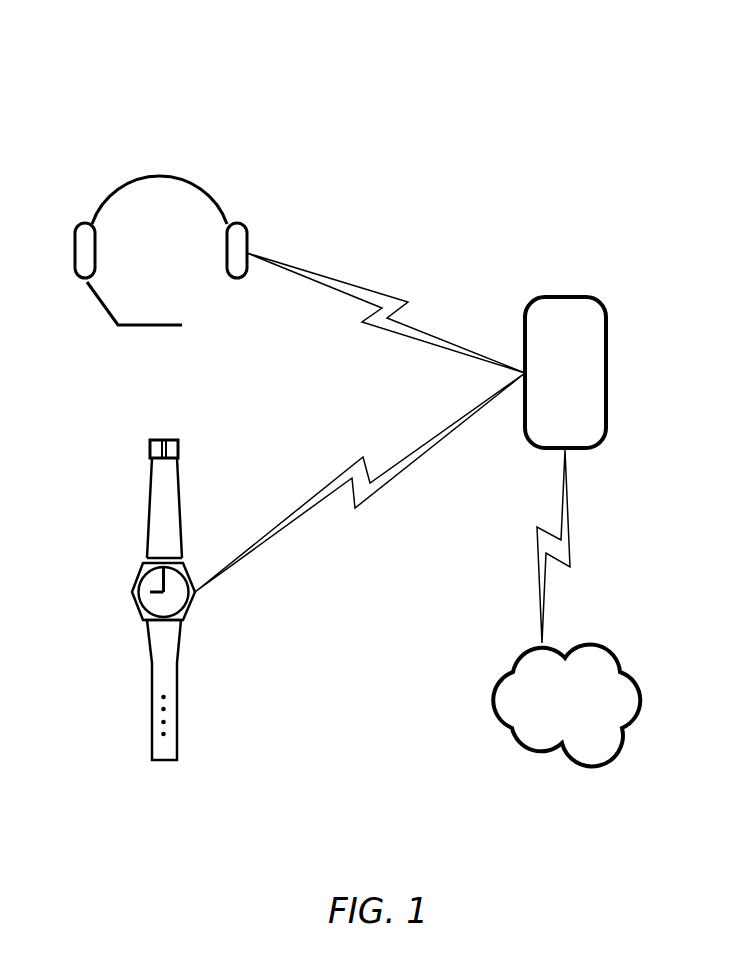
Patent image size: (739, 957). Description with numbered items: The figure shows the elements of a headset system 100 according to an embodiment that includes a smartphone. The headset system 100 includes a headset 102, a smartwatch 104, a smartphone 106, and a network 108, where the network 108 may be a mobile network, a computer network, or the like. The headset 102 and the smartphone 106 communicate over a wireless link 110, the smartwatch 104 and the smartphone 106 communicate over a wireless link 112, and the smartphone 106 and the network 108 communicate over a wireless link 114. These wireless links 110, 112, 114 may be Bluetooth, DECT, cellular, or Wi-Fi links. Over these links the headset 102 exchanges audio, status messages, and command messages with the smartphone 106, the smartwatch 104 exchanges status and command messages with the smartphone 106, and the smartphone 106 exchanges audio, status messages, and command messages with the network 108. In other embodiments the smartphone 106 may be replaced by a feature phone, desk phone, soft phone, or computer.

The headset system 100 is at (372, 74).
The headset 102 is at (178, 261).
The smartwatch 104 is at (111, 590).
The smartphone 106 is at (582, 384).
The network 108 is at (549, 721).
The wireless link 110 is at (395, 295).
The wireless link 112 is at (360, 455).
The wireless link 114 is at (537, 543).